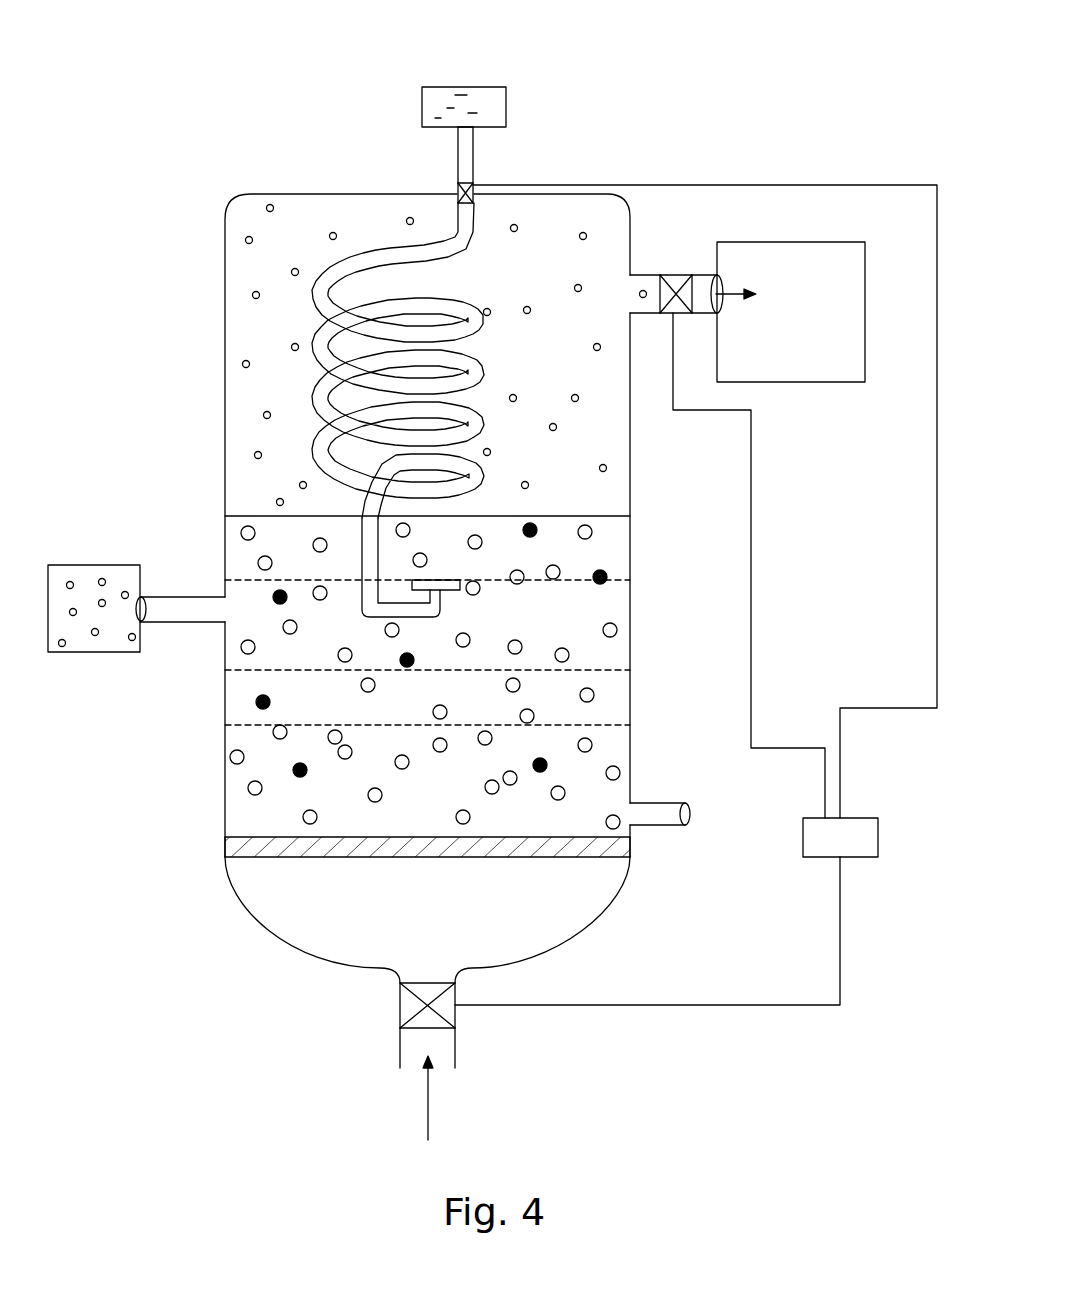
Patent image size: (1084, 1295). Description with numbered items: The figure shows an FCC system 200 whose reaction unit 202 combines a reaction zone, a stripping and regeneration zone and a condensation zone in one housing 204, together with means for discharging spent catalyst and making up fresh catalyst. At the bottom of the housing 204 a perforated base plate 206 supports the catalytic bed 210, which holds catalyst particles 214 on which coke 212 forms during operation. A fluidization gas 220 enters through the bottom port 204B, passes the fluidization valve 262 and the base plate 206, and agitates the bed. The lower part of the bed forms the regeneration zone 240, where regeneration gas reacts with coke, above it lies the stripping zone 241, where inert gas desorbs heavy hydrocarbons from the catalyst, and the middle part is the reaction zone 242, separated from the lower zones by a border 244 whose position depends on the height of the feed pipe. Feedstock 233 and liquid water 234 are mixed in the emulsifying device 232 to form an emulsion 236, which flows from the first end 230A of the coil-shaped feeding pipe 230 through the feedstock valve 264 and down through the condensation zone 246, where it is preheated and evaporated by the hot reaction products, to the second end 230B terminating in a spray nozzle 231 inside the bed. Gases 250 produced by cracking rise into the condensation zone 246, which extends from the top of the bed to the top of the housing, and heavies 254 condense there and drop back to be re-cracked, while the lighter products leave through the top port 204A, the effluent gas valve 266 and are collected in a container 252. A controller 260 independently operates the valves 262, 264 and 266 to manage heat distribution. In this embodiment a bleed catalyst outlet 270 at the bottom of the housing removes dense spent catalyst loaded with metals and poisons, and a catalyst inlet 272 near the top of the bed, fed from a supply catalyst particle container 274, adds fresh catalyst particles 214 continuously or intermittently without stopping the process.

The FCC system 200 is at (137, 82).
The reaction unit 202 is at (222, 380).
The housing 204 is at (222, 485).
The top port 204A is at (702, 275).
The bottom port 204B is at (455, 1043).
The perforated base plate 206 is at (247, 845).
The catalytic bed 210 is at (602, 752).
The coke 212 is at (614, 622).
The catalyst particles 214 is at (607, 573).
The fluidization gas 220 is at (430, 1105).
The feeding pipe 230 is at (478, 167).
The first end of feeding pipe 230A is at (457, 128).
The second end of feeding pipe 230B is at (440, 608).
The spray nozzle 231 is at (440, 580).
The emulsifying device 232 is at (508, 108).
The feedstock 233 is at (439, 100).
The liquid water 234 is at (482, 100).
The emulsion 236 is at (465, 327).
The regeneration zone 240 is at (600, 796).
The stripping zone 241 is at (252, 696).
The reaction zone 242 is at (584, 548).
The border 244 is at (605, 670).
The condensation zone 246 is at (595, 405).
The reaction product gases 250 is at (490, 311).
The container 252 is at (805, 382).
The heavies 254 is at (561, 432).
The controller 260 is at (845, 818).
The fluidization valve 262 is at (405, 1005).
The feedstock valve 264 is at (457, 193).
The effluent gas valve 266 is at (670, 275).
The bleed catalyst outlet 270 is at (665, 825).
The catalyst inlet 272 is at (141, 597).
The supply catalyst particle container 274 is at (80, 652).